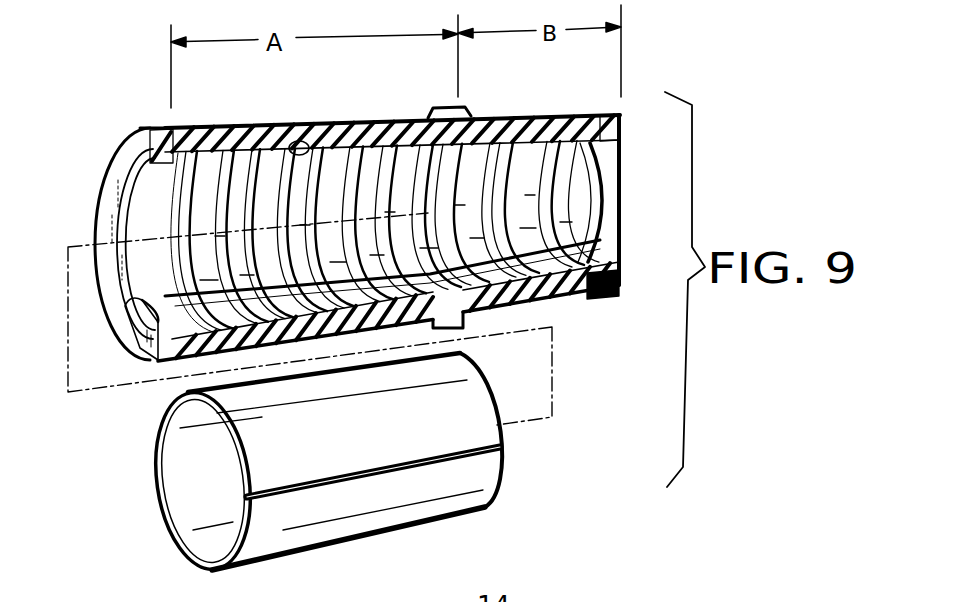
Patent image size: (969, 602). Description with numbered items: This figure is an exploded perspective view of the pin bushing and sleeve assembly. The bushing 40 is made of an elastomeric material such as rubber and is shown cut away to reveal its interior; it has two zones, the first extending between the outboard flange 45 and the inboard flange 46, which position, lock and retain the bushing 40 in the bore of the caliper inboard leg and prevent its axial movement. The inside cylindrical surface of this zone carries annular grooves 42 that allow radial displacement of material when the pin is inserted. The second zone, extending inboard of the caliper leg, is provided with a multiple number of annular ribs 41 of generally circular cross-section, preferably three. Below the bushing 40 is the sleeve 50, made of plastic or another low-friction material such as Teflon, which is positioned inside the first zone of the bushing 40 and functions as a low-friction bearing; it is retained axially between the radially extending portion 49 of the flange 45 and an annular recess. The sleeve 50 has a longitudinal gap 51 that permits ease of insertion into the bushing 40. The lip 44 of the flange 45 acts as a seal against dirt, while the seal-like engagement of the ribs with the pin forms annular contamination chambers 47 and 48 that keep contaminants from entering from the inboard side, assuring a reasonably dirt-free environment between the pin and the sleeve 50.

The bushing 40 is at (598, 217).
The annular ribs 41 is at (534, 145).
The annular grooves 42 is at (293, 135).
The lip 44 is at (123, 321).
The outboard flange 45 is at (120, 162).
The inboard flange 46 is at (448, 118).
The annular contamination chamber 47 is at (518, 303).
The annular contamination chamber 48 is at (586, 298).
The radially extending portion 49 is at (181, 178).
The sleeve 50 is at (428, 533).
The longitudinal gap 51 is at (503, 447).